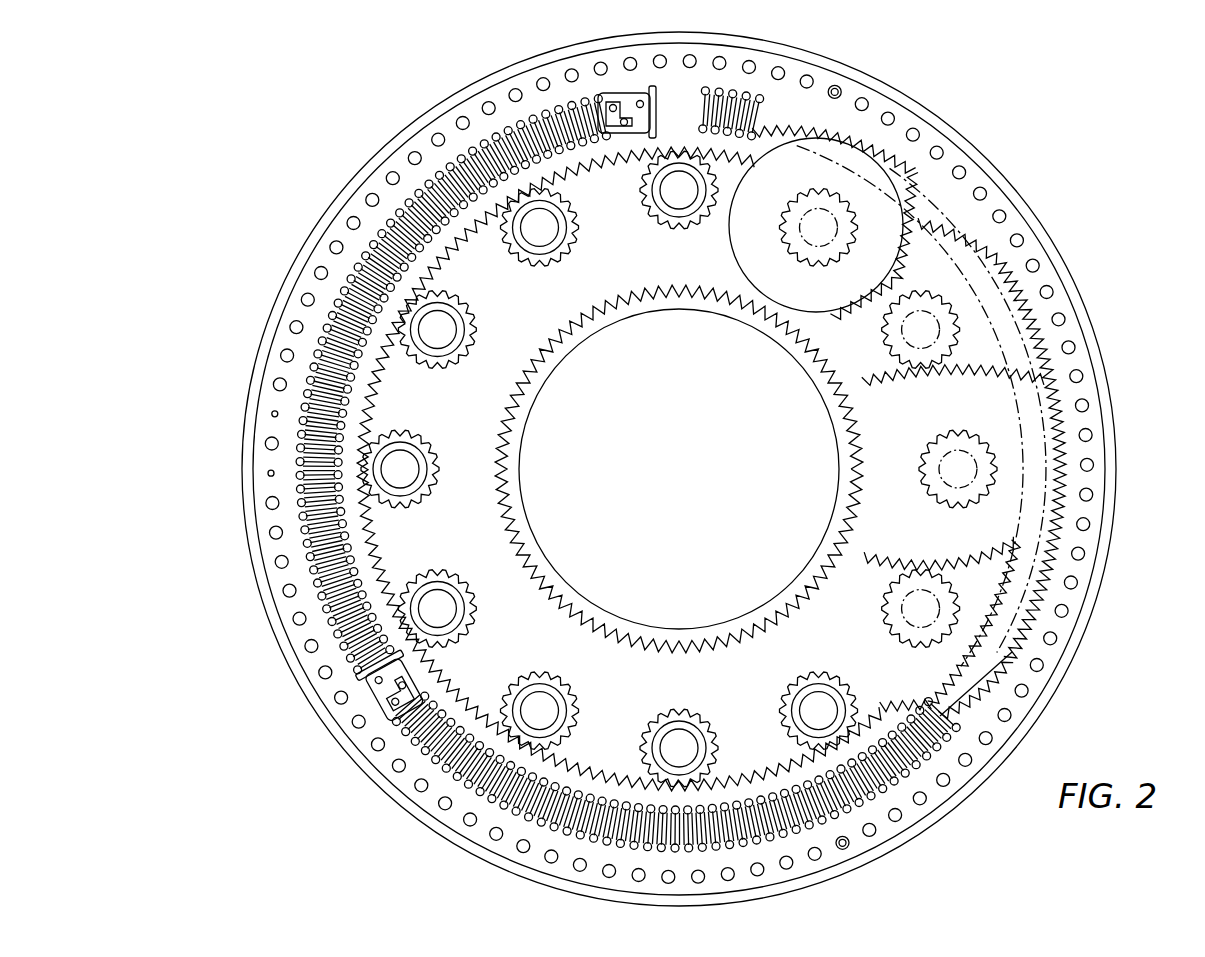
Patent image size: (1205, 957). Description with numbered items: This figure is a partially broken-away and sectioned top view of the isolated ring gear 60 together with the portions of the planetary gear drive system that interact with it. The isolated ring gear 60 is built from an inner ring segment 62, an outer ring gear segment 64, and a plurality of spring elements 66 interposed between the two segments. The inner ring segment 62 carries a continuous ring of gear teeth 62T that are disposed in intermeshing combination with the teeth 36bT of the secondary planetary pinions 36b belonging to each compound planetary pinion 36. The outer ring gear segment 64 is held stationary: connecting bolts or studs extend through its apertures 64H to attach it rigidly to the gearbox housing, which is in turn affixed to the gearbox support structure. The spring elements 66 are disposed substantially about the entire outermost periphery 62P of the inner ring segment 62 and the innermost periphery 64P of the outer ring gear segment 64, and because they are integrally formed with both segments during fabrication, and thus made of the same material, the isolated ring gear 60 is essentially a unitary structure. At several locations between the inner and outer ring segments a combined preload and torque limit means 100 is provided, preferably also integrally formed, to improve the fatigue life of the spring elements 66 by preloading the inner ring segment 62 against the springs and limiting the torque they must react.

The isolated ring gear 60 is at (638, 469).
The outer ring gear segment 64 is at (679, 469).
The apertures of the outer ring segment 64H is at (679, 469).
The innermost periphery of the outer ring segment 64P is at (569, 469).
The spring elements 66 is at (616, 469).
The inner ring segment 62 is at (711, 458).
The gear teeth of the inner ring segment 62T is at (596, 228).
The outermost periphery of the inner ring segment 62P is at (633, 469).
The compound planetary pinion 36 is at (706, 465).
The secondary planetary pinion 36b is at (674, 414).
The teeth of the secondary planetary pinion 36bT is at (610, 233).
The combined preload and torque limit means 100 is at (449, 396).